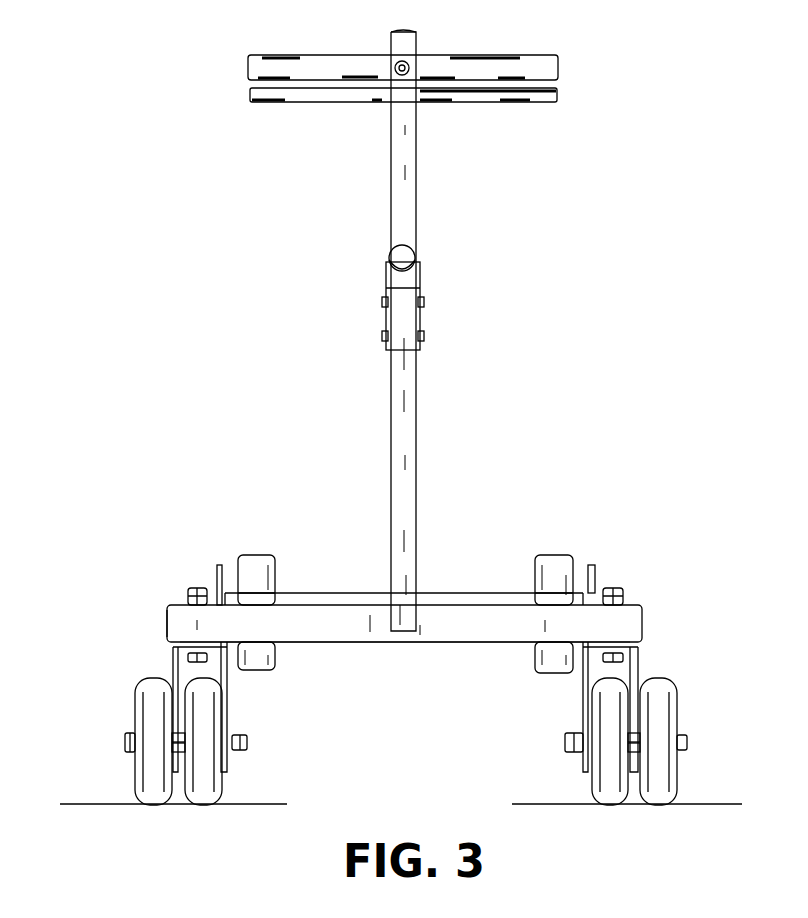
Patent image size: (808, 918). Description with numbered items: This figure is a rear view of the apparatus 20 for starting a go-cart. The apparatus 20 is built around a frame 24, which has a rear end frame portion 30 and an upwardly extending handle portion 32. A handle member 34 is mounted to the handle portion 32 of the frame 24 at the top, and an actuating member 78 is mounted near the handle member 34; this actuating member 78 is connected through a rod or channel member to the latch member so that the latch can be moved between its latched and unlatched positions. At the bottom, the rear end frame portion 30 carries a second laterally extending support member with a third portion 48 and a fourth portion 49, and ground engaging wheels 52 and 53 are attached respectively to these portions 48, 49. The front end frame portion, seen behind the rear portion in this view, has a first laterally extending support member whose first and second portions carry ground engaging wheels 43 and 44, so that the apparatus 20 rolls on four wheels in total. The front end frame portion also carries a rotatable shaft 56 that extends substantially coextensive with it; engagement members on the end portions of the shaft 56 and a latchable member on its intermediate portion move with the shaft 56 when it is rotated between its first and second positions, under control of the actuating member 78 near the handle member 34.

The apparatus 20 is at (282, 362).
The frame 24 is at (390, 463).
The rear end frame portion 30 is at (288, 625).
The handle portion 32 is at (398, 200).
The handle member 34 is at (318, 70).
The ground engaging wheel 43 is at (610, 780).
The ground engaging wheel 44 is at (202, 787).
The third portion 48 is at (613, 625).
The fourth portion 49 is at (183, 621).
The ground engaging wheel 52 is at (657, 782).
The ground engaging wheel 53 is at (152, 772).
The rotatable shaft 56 is at (483, 600).
The actuating member 78 is at (483, 97).